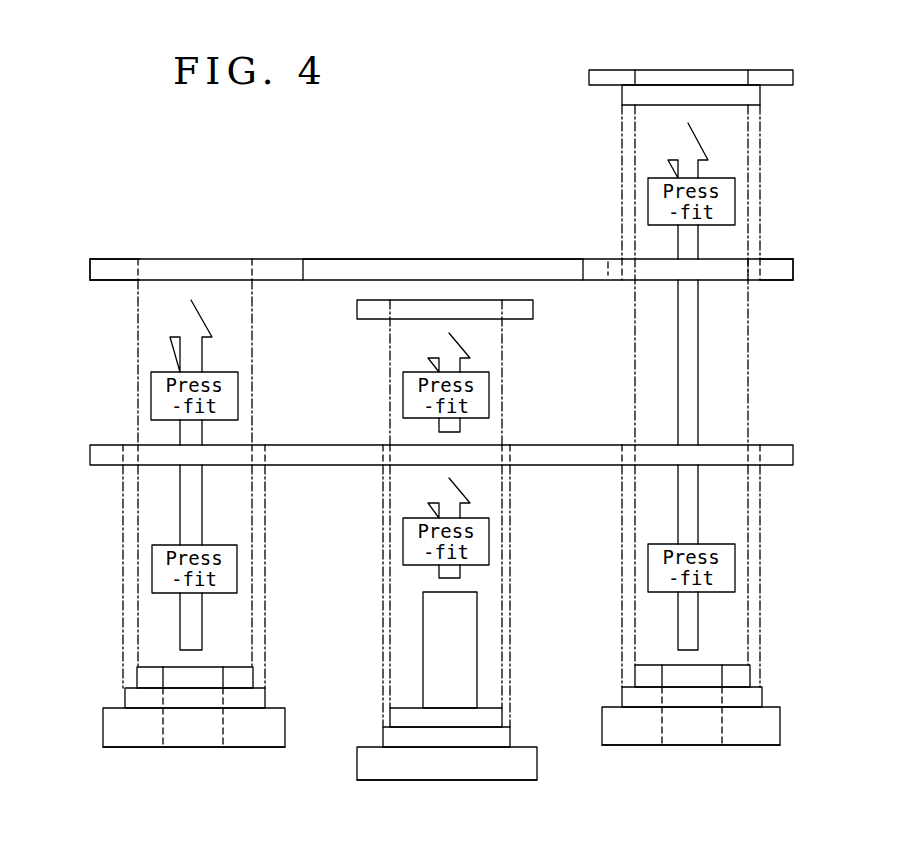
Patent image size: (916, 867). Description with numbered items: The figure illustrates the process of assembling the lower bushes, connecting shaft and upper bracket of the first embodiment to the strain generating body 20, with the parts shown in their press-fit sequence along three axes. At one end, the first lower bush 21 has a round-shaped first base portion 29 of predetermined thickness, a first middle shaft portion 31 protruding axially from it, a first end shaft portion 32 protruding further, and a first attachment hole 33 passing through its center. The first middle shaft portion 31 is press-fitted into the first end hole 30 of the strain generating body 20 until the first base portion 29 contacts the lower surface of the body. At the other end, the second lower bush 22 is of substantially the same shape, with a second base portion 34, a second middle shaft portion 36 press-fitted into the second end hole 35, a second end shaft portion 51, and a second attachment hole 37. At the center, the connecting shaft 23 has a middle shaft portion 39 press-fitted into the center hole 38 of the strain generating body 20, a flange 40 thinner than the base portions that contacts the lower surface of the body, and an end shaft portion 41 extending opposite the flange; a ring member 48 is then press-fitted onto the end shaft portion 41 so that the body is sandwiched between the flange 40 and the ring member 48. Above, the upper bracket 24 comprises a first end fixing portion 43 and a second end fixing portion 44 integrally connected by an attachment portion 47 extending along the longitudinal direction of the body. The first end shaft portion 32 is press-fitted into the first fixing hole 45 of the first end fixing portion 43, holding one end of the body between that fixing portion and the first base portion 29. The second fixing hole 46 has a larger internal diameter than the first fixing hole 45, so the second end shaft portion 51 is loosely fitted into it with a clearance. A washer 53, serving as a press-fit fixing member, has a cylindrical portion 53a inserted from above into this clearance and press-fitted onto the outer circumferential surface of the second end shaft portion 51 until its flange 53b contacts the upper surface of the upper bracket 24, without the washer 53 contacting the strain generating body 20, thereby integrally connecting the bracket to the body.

The strain generating body 20 is at (329, 472).
The first lower bush 21 is at (147, 752).
The second lower bush 22 is at (642, 752).
The connecting shaft 23 is at (423, 786).
The upper bracket 24 is at (383, 254).
The first base portion 29 is at (110, 730).
The first end hole 30 is at (125, 456).
The first middle shaft portion 31 is at (130, 698).
The first end shaft portion 32 is at (147, 680).
The first attachment hole 33 is at (231, 750).
The second base portion 34 is at (775, 725).
The second end hole 35 is at (766, 440).
The second middle shaft portion 36 is at (755, 696).
The second attachment hole 37 is at (729, 750).
The center hole 38 is at (500, 452).
The middle shaft portion 39 is at (505, 738).
The flange 40 is at (497, 770).
The end shaft portion 41 is at (395, 718).
The first end fixing portion 43 is at (92, 268).
The second end fixing portion 44 is at (795, 268).
The first fixing hole 45 is at (139, 266).
The second fixing hole 46 is at (773, 270).
The attachment portion 47 is at (508, 262).
The ring member 48 is at (533, 305).
The second end shaft portion 51 is at (742, 675).
The washer 53 is at (669, 65).
The cylindrical portion 53a is at (760, 96).
The flange 53b is at (592, 78).